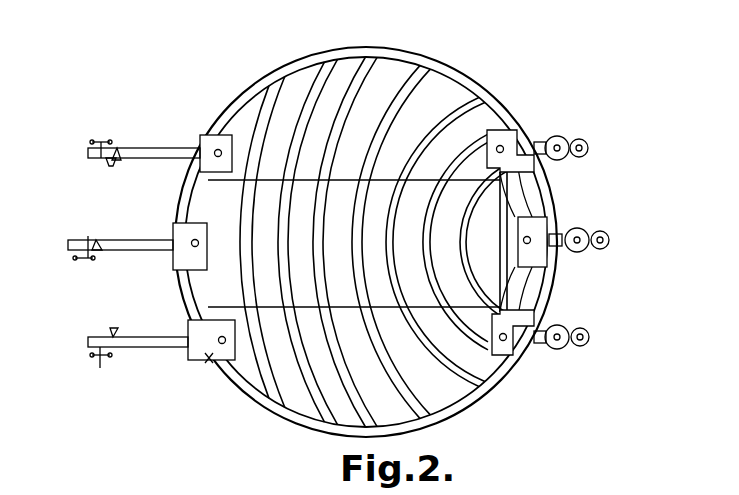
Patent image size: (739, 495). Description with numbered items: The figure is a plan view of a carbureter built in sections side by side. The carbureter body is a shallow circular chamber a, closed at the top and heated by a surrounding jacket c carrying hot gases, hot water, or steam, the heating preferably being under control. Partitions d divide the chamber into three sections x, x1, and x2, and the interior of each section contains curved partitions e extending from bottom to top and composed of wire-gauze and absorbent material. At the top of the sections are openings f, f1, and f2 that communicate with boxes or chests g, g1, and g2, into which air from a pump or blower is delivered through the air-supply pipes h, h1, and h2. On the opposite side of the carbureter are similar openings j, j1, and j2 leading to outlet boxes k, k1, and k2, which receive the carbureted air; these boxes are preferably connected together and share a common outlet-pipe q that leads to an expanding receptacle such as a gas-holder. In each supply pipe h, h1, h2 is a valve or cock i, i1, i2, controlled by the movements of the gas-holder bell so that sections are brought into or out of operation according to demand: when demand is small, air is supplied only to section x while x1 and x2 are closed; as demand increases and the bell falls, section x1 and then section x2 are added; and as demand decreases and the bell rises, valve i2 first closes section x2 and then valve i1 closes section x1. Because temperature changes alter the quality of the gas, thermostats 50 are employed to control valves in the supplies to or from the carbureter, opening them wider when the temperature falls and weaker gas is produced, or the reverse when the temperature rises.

The shallow circular chamber a is at (468, 95).
The jacket c is at (447, 66).
The partitions d is at (381, 181).
The curved partitions e is at (334, 157).
The opening f is at (219, 343).
The opening f1 is at (195, 248).
The opening f2 is at (228, 141).
The box or chest g is at (208, 360).
The box or chest g1 is at (205, 223).
The box or chest g2 is at (200, 165).
The air-supply pipe h is at (138, 366).
The air-supply pipe h1 is at (120, 237).
The air-supply pipe h2 is at (144, 138).
The valve or cock i is at (142, 340).
The valve or cock i1 is at (103, 247).
The valve or cock i2 is at (118, 150).
The opening j is at (506, 341).
The opening j1 is at (531, 238).
The opening j2 is at (505, 148).
The box k is at (518, 328).
The box k1 is at (545, 254).
The box k2 is at (504, 130).
The common outlet-pipe q is at (572, 233).
The section x is at (453, 274).
The section x1 is at (441, 242).
The section x2 is at (435, 241).
The thermostat 50 is at (566, 154).